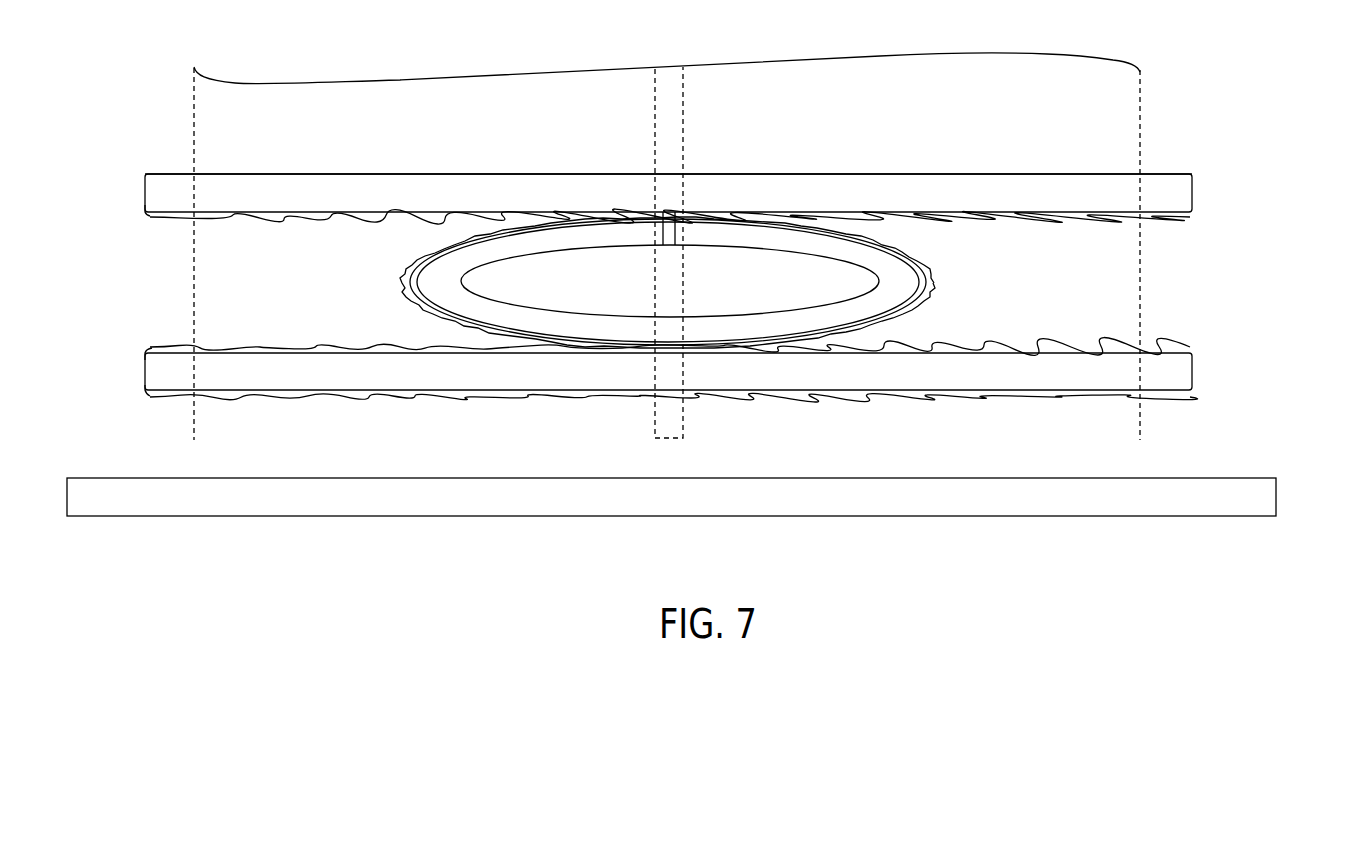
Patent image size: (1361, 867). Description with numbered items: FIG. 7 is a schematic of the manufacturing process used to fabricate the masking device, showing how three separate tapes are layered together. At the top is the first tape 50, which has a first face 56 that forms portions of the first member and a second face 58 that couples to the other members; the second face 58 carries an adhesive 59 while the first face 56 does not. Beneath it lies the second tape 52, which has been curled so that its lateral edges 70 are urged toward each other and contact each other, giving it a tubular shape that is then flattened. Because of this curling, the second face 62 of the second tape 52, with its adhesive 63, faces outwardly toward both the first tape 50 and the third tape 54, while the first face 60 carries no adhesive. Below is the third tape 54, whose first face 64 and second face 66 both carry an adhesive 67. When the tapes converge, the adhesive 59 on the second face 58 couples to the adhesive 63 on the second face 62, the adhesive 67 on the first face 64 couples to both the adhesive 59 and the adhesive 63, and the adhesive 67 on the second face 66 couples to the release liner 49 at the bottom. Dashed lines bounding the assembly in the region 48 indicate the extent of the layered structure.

The sealing region boundary 48 is at (193, 93).
The release liner 49 is at (1278, 498).
The first tape 50 is at (1193, 193).
The second tape 52 is at (406, 294).
The third tape 54 is at (1193, 372).
The first face of the first tape 56 is at (972, 174).
The second face of the first tape 58 is at (982, 216).
The adhesive of the first tape 59 is at (162, 218).
The first face of the second tape 60 is at (498, 300).
The second face of the second tape 62 is at (424, 260).
The adhesive of the second tape 63 is at (930, 298).
The first face of the third tape 64 is at (1047, 352).
The second face of the third tape 66 is at (1043, 392).
The adhesive of the third tape 67 is at (158, 347).
The lateral edges 70 is at (674, 216).